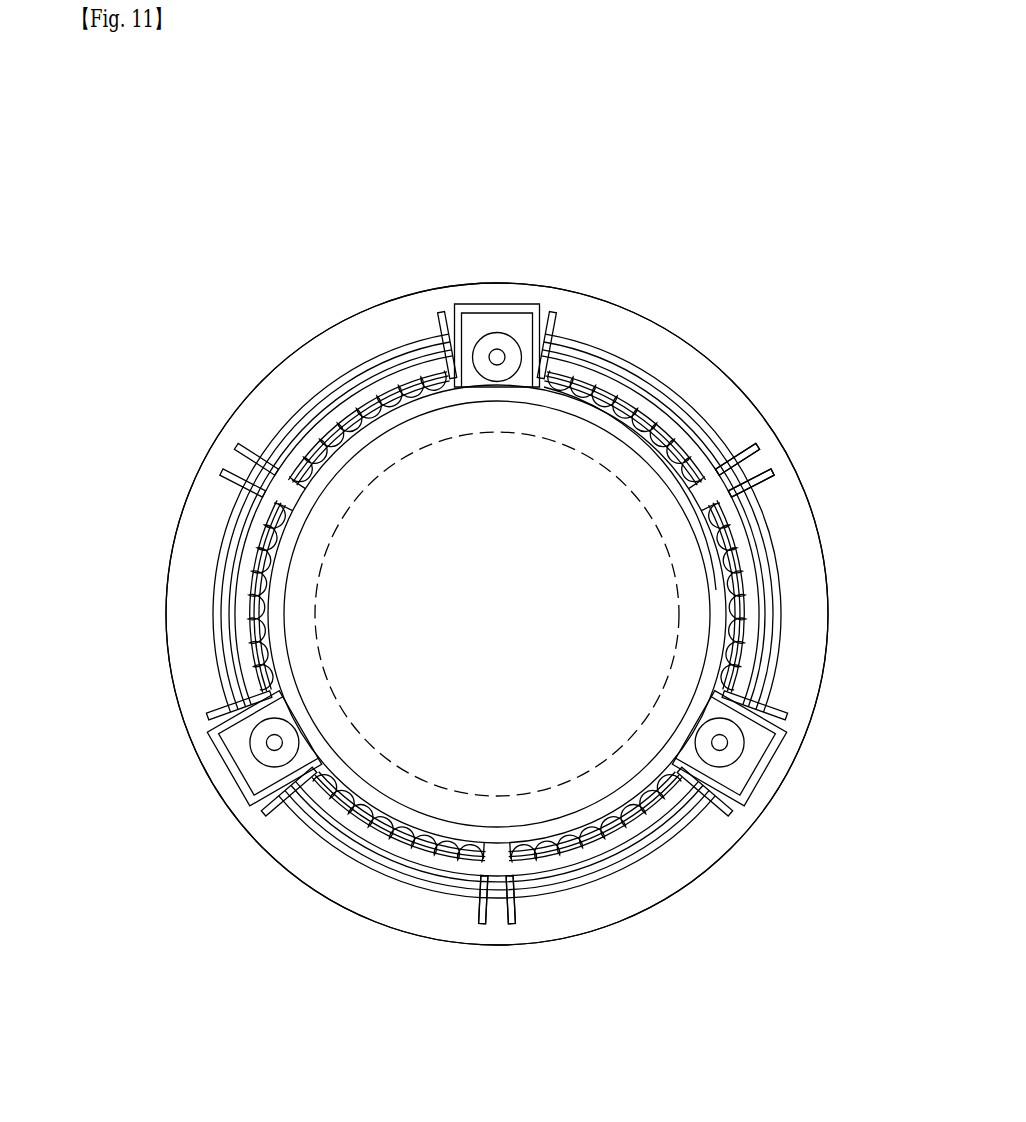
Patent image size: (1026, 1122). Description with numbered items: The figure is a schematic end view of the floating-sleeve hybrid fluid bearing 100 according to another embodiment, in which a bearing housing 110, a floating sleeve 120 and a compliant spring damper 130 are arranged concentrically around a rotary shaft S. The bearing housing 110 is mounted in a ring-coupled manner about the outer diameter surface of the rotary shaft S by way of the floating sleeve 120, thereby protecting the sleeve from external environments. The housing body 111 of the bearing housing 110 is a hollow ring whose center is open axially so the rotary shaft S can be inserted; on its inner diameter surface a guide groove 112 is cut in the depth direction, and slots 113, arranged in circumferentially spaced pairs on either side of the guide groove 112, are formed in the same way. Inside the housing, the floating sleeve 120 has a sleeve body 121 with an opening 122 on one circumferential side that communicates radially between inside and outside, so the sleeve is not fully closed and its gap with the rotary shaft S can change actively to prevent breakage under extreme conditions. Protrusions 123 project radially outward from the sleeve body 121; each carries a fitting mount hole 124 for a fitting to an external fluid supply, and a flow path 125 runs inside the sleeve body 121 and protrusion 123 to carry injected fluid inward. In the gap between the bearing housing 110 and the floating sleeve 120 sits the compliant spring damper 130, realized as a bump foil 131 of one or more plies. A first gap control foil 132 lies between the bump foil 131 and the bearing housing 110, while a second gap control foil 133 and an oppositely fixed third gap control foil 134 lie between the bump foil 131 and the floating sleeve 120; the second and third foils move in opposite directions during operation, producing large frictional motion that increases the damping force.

The floating-sleeve hybrid fluid bearing 100 is at (809, 103).
The bearing housing 110 is at (607, 239).
The housing body 111 is at (722, 384).
The guide groove 112 is at (513, 306).
The slot 113 is at (783, 490).
The floating sleeve 120 is at (497, 644).
The sleeve body 121 is at (593, 413).
The opening 122 is at (496, 832).
The protrusion 123 is at (796, 775).
The fitting mount hole 124 is at (730, 758).
The flow path 125 is at (722, 743).
The compliant spring damper 130 is at (388, 616).
The bump foil 131 is at (228, 608).
The first gap control foil 132 is at (215, 642).
The second gap control foil 133 is at (225, 565).
The third gap control foil 134 is at (235, 523).
The rotary shaft S is at (569, 742).